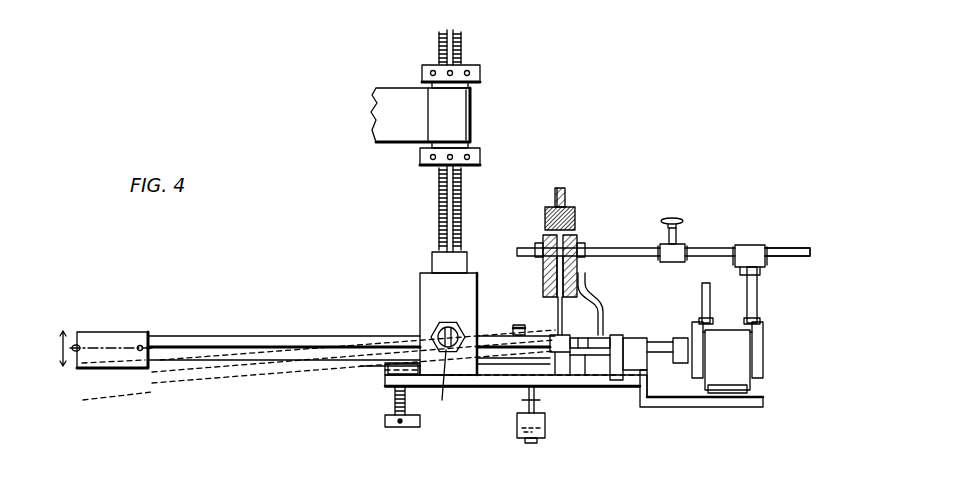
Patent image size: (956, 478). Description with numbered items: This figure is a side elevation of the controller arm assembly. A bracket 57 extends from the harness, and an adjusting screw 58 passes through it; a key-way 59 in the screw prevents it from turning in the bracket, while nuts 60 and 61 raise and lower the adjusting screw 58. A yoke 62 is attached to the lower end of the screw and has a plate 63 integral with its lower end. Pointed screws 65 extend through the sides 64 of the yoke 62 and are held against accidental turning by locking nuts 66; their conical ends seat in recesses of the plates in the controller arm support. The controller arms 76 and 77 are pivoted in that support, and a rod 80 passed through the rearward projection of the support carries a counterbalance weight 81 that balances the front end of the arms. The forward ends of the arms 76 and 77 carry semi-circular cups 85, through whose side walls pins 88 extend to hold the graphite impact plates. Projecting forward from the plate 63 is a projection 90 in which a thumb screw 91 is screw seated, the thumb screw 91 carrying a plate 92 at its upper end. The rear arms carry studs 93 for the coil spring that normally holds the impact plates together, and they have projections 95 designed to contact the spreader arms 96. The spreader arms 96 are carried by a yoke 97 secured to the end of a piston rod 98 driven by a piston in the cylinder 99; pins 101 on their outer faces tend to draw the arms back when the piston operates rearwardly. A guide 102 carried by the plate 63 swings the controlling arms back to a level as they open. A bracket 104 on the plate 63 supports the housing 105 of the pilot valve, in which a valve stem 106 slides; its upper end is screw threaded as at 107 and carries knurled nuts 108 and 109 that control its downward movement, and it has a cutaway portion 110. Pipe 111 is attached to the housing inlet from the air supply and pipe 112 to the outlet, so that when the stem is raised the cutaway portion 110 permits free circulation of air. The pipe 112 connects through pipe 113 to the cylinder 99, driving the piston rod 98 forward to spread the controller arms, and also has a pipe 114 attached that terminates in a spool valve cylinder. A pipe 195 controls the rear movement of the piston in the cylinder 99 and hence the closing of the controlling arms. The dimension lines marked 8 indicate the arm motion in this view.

The key-way 59 is at (455, 30).
The nut 60 is at (470, 65).
The bracket 57 is at (420, 115).
The nut 61 is at (477, 150).
The adjusting screw 58 is at (438, 190).
The yoke 62 is at (420, 276).
The sides of the yoke 64 is at (448, 324).
The locking nuts 66 is at (442, 326).
The pointed screws 65 is at (442, 400).
The projection 90 is at (386, 376).
The thumb screw 91 is at (397, 398).
The plate 92 is at (393, 368).
The cups 85 is at (118, 333).
The pins 88 is at (77, 352).
The arm motion 8 is at (178, 400).
The controller arm 76 is at (287, 337).
The controller arm 77 is at (302, 361).
The pipe 111 is at (522, 253).
The housing 105 is at (578, 239).
The knurled nut 109 is at (580, 217).
The screw threaded upper end 107 is at (563, 187).
The knurled nut 108 is at (551, 209).
The cutaway portion 110 is at (578, 268).
The studs 93 is at (493, 331).
The valve stem 106 is at (560, 299).
The guide 102 is at (520, 321).
The bracket 104 is at (601, 323).
The pins 101 is at (620, 341).
The piston rod 98 is at (668, 348).
The yoke 97 is at (648, 366).
The cylinder 99 is at (727, 357).
The pipe 195 is at (705, 288).
The pipe 113 is at (759, 298).
The pipe 112 is at (702, 251).
The pipe 114 is at (797, 250).
The rod 80 is at (527, 390).
The counterbalance weight 81 is at (517, 424).
The projections 95 is at (560, 388).
The plate 63 is at (572, 388).
The spreader arms 96 is at (586, 376).